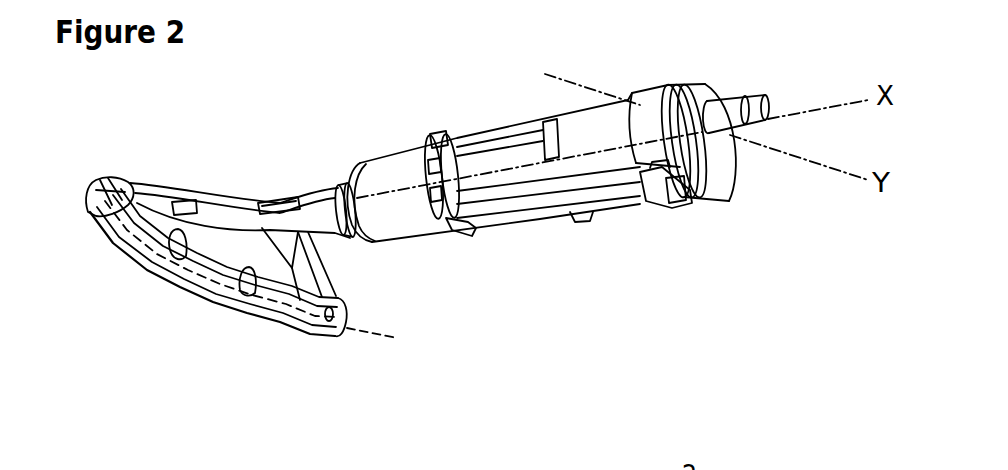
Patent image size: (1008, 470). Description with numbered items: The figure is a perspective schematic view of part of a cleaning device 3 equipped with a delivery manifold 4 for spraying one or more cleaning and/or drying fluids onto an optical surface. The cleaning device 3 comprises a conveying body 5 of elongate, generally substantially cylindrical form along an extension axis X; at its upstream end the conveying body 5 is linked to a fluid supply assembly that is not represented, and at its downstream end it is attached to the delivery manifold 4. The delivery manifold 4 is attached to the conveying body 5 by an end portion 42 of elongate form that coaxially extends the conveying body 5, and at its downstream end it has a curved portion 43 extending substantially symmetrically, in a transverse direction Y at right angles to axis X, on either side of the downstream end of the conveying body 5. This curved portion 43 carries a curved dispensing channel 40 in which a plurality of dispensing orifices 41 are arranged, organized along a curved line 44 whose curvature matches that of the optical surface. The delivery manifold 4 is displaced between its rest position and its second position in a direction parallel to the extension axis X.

The cleaning device 3 is at (502, 290).
The delivery manifold 4 is at (206, 174).
The conveying body 5 is at (586, 248).
The dispensing channel 40 is at (210, 282).
The dispensing orifices 41 is at (248, 288).
The end portion 42 is at (317, 183).
The curved portion 43 is at (133, 257).
The curved line 44 is at (90, 190).